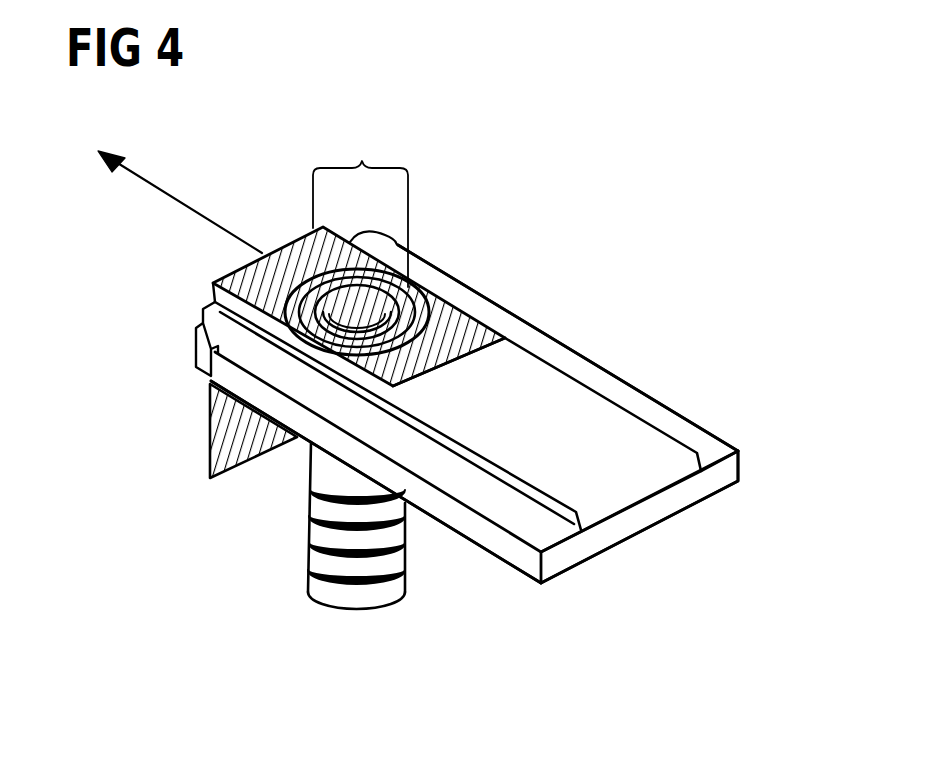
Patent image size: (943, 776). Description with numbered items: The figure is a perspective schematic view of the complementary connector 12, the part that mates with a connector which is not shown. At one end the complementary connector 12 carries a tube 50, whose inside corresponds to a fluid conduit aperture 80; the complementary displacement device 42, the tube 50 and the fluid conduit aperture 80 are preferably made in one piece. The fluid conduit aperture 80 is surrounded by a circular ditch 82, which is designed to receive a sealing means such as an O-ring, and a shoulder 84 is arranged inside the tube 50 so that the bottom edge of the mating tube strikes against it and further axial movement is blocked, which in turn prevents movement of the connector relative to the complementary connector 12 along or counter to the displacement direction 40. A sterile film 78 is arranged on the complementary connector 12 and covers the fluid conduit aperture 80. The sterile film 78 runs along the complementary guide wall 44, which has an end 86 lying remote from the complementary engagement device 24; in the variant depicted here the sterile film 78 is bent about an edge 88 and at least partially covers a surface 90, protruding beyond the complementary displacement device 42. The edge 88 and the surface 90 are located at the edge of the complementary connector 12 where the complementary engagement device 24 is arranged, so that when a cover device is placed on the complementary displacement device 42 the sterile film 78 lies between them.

The complementary connector 12 is at (221, 563).
The complementary engagement device 24 is at (197, 327).
The displacement direction 40 is at (155, 188).
The complementary displacement device 42 is at (740, 462).
The complementary guide wall 44 is at (600, 428).
The tube 50 is at (372, 592).
The sterile film 78 is at (235, 453).
The fluid conduit aperture 80 is at (360, 202).
The circular ditch 82 is at (450, 273).
The shoulder 84 is at (418, 378).
The end of the complementary guide wall 86 is at (647, 505).
The edge 88 is at (323, 226).
The surface 90 is at (262, 250).